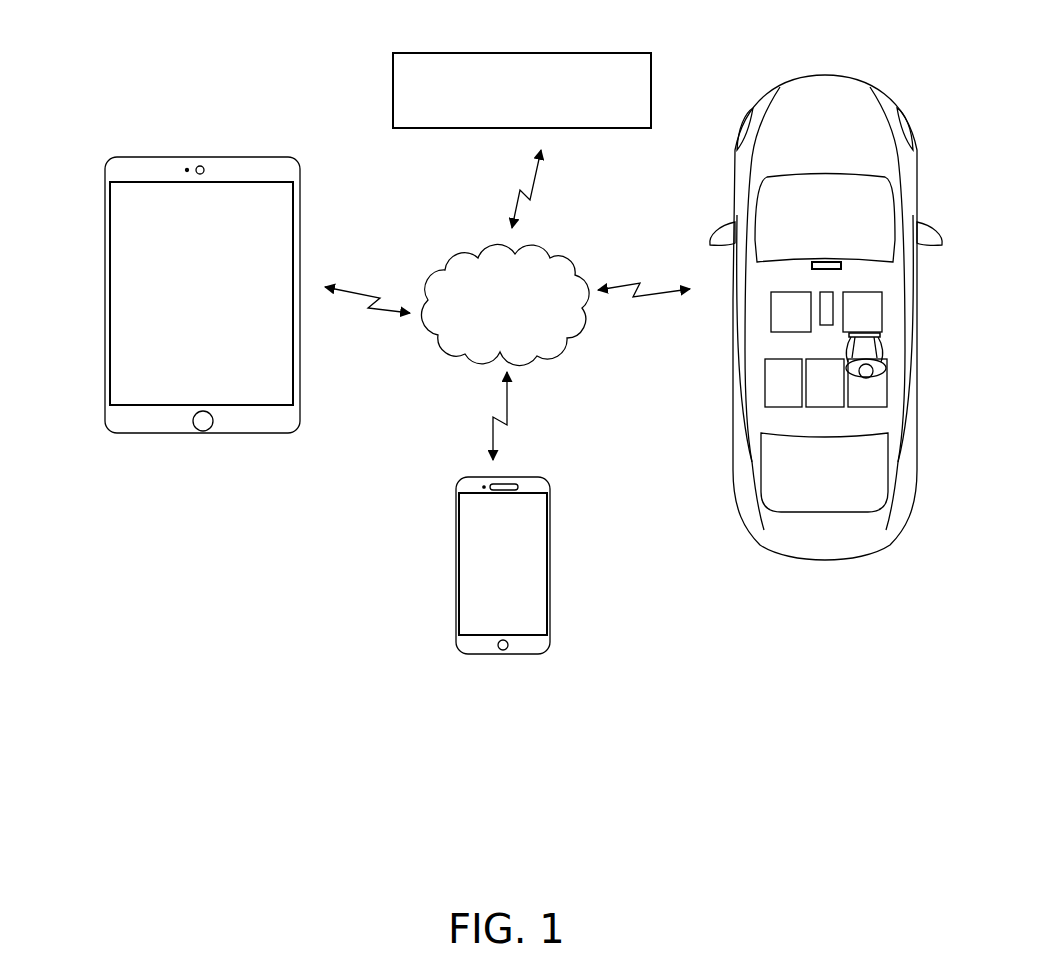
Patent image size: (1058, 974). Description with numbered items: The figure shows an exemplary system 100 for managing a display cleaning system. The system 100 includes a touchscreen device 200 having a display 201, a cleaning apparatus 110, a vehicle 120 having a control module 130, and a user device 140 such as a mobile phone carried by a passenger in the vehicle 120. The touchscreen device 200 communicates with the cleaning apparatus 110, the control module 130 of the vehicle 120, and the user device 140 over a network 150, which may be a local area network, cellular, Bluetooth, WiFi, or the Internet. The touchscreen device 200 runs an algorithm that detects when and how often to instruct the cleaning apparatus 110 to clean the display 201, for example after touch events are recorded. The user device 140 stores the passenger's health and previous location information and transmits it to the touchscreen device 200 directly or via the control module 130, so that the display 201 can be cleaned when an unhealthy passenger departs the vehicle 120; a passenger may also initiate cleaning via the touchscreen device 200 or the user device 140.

The system 100 is at (694, 49).
The cleaning apparatus 110 is at (393, 70).
The vehicle 120 is at (838, 73).
The control module 130 is at (828, 260).
The user device 140 is at (455, 575).
The network 150 is at (505, 304).
The touchscreen device 200 is at (155, 157).
The display 201 is at (123, 182).